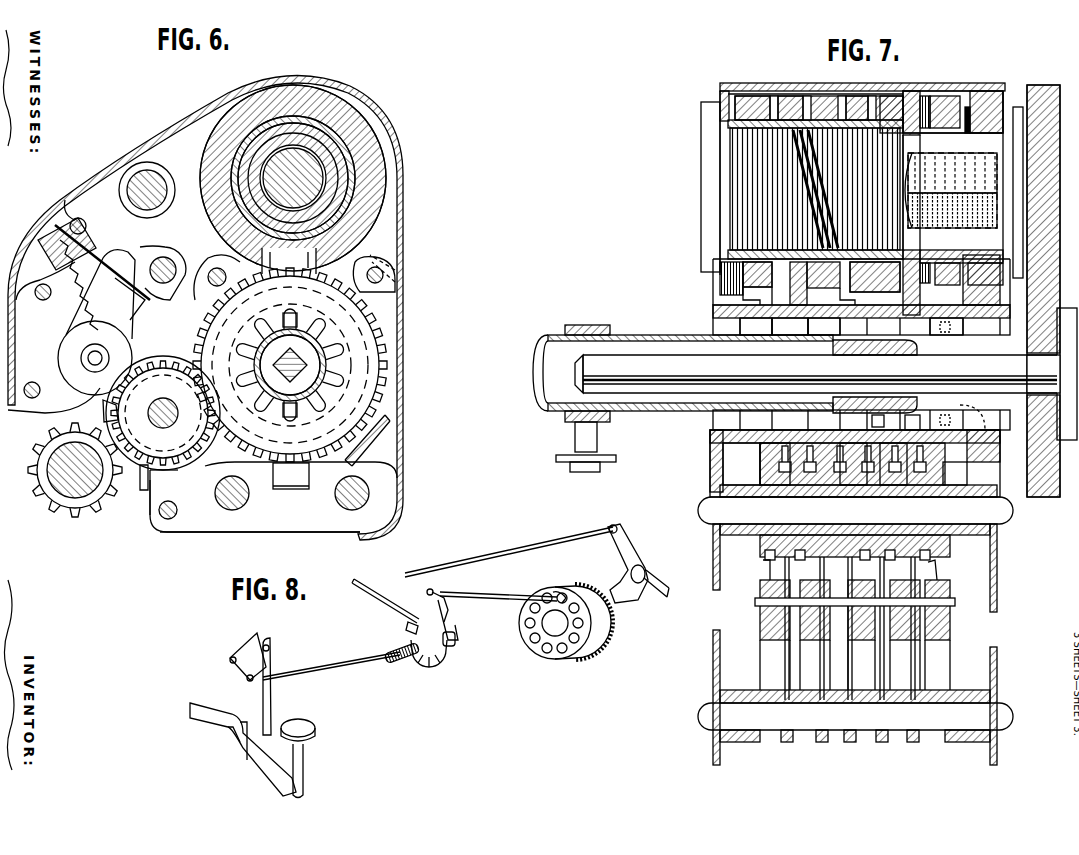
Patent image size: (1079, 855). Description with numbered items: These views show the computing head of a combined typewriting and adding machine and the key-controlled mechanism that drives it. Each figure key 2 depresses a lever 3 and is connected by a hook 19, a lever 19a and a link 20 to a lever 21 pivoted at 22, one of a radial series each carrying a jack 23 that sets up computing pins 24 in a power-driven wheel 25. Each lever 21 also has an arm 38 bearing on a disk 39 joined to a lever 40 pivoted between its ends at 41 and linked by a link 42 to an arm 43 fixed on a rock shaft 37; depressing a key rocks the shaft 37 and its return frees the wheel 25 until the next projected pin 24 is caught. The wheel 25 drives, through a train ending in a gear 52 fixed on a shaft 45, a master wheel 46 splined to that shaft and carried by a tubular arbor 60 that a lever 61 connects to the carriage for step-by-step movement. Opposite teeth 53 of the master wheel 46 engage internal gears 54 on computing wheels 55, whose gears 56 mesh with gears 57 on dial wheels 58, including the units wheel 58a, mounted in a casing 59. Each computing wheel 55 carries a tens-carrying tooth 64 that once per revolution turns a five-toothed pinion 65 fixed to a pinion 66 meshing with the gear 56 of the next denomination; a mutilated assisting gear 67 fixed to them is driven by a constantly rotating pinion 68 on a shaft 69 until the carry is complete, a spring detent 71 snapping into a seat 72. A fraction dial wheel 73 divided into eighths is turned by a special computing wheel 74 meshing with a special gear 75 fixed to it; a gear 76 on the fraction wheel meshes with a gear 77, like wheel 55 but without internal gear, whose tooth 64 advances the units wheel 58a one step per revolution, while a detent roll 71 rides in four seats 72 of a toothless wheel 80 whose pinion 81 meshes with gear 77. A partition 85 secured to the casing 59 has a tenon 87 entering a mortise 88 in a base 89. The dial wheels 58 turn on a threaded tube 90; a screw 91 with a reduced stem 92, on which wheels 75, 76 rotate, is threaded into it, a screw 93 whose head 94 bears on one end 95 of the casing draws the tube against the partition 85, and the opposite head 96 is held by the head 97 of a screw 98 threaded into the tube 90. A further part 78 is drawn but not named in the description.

In FIG. 8, the figure keys 2 is at (305, 758).
In FIG. 8, the levers 3 is at (226, 730).
In FIG. 8, the hook 19 is at (272, 697).
In FIG. 8, the lever 19a is at (237, 666).
In FIG. 8, the link 20 is at (338, 664).
In FIG. 8, the lever 21 is at (446, 628).
In FIG. 8, the pivot 22 is at (427, 612).
In FIG. 8, the jack 23 is at (503, 600).
In FIG. 8, the computing pins 24 is at (553, 594).
In FIG. 8, the power-driven wheel 25 is at (598, 630).
In FIG. 8, the rock shaft 37 is at (660, 590).
In FIG. 8, the arm 38 is at (456, 638).
In FIG. 8, the disk 39 is at (440, 664).
In FIG. 8, the lever 40 is at (378, 598).
In FIG. 8, the pivot 41 is at (406, 628).
In FIG. 8, the link 42 is at (530, 549).
In FIG. 8, the arm 43 is at (628, 542).
In FIG. 6, the shaft 45 is at (310, 370).
In FIG. 7, the shaft 45 is at (817, 373).
In FIG. 7, the master wheel 46 is at (897, 345).
In FIG. 7, the gear 52 is at (1067, 374).
In FIG. 6, the opposite teeth 53 is at (300, 327).
In FIG. 7, the opposite teeth 53 is at (867, 425).
In FIG. 6, the internal gears 54 is at (322, 320).
In FIG. 7, the internal gears 54 is at (789, 327).
In FIG. 6, the computing wheels 55 is at (375, 362).
In FIG. 7, the computing wheels 55 is at (908, 92).
In FIG. 6, the gears 56 is at (380, 325).
In FIG. 7, the gears 56 is at (773, 285).
In FIG. 6, the gears 57 is at (289, 261).
In FIG. 7, the gears 57 is at (790, 96).
In FIG. 6, the dial wheels 58 is at (382, 223).
In FIG. 7, the dial wheels 58 is at (752, 96).
In FIG. 7, the units wheel 58a is at (860, 96).
In FIG. 6, the casing 59 is at (404, 165).
In FIG. 7, the casing 59 is at (940, 94).
In FIG. 6, the tubular arbor 60 is at (322, 390).
In FIG. 7, the tubular arbor 60 is at (660, 335).
In FIG. 7, the lever 61 is at (556, 458).
In FIG. 6, the tens-carrying tooth 64 is at (242, 485).
In FIG. 7, the tens-carrying tooth 64 is at (900, 488).
In FIG. 6, the five toothed pinion 65 is at (163, 425).
In FIG. 7, the five toothed pinion 65 is at (925, 488).
In FIG. 6, the pinion 66 is at (178, 362).
In FIG. 7, the pinion 66 is at (762, 472).
In FIG. 6, the mutilated assisting gear 67 is at (144, 480).
In FIG. 7, the mutilated assisting gear 67 is at (765, 565).
In FIG. 6, the constantly rotating pinions 68 is at (60, 512).
In FIG. 6, the shaft 69 is at (48, 490).
In FIG. 6, the spring detent 71 is at (62, 350).
In FIG. 7, the spring detent 71 is at (945, 633).
In FIG. 6, the seat 72 is at (132, 362).
In FIG. 7, the fraction dial wheel 73 is at (955, 96).
In FIG. 7, the special computing wheel 74 is at (967, 473).
In FIG. 7, the special gear 75 is at (992, 91).
In FIG. 7, the gear 76 is at (912, 94).
In FIG. 7, the gear 77 is at (960, 329).
In FIG. 7, the rod 78 is at (942, 588).
In FIG. 6, the special wheel 80 is at (104, 413).
In FIG. 7, the special wheel 80 is at (950, 546).
In FIG. 7, the pinion 81 is at (932, 558).
In FIG. 6, the partition 85 is at (397, 252).
In FIG. 7, the partition 85 is at (912, 226).
In FIG. 6, the tenon 87 is at (291, 476).
In FIG. 6, the mortise 88 is at (295, 490).
In FIG. 6, the base 89 is at (262, 532).
In FIG. 7, the tube 90 is at (720, 94).
In FIG. 7, the screw 91 is at (900, 150).
In FIG. 7, the reduced stem 92 is at (973, 131).
In FIG. 7, the screw 93 is at (952, 237).
In FIG. 7, the head 94 is at (995, 208).
In FIG. 7, the end of the casing 95 is at (1030, 100).
In FIG. 7, the opposite head 96 is at (722, 92).
In FIG. 7, the head 97 is at (701, 183).
In FIG. 7, the screw 98 is at (730, 200).